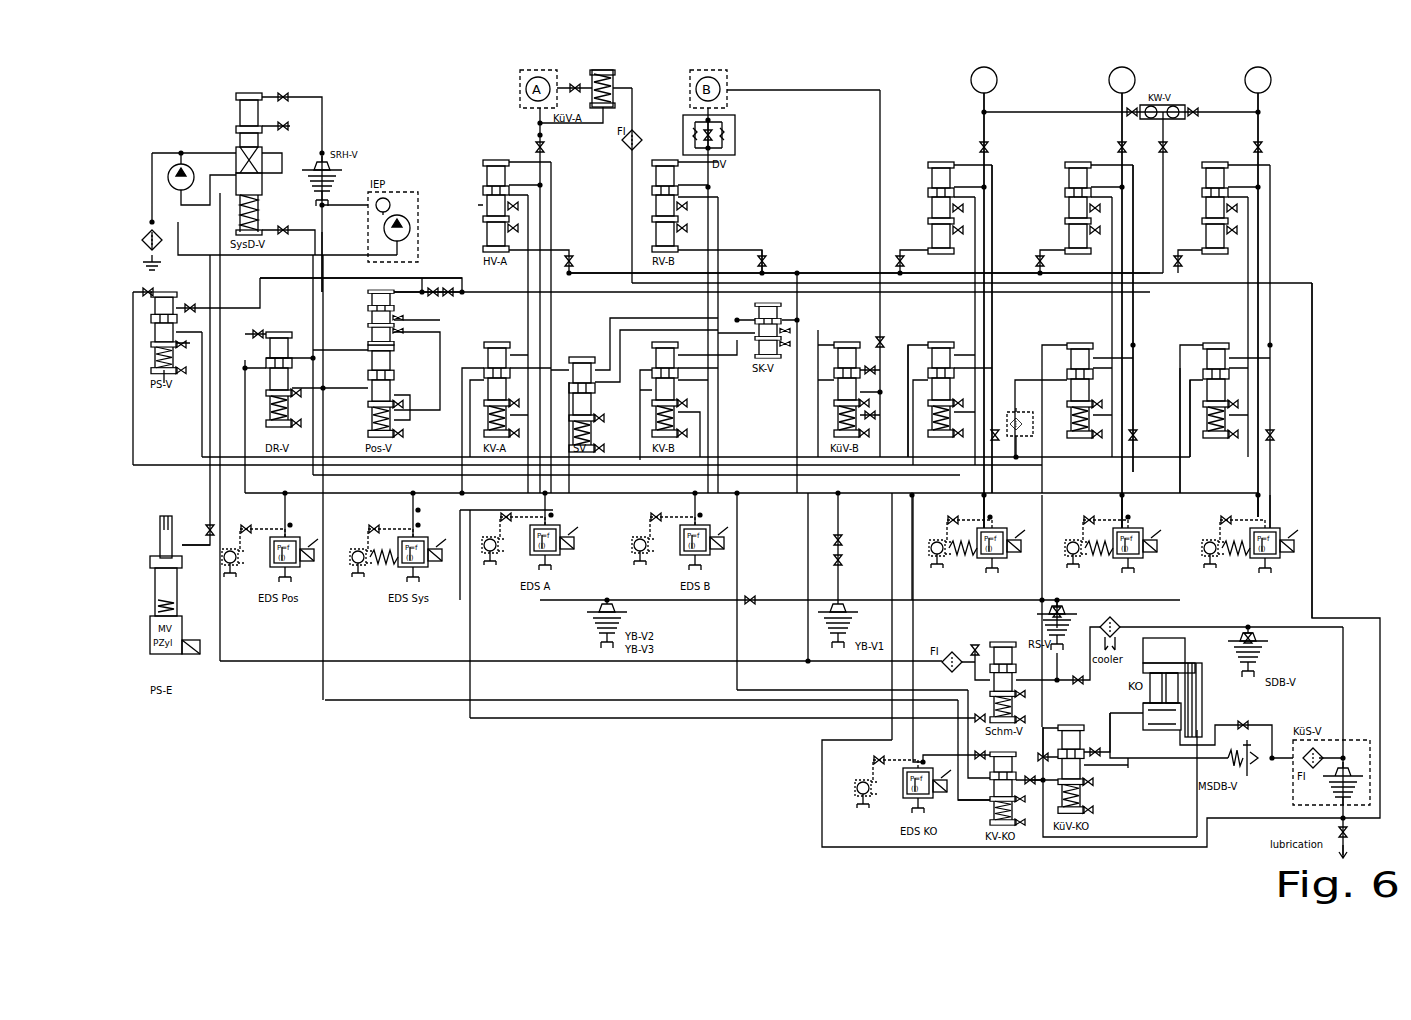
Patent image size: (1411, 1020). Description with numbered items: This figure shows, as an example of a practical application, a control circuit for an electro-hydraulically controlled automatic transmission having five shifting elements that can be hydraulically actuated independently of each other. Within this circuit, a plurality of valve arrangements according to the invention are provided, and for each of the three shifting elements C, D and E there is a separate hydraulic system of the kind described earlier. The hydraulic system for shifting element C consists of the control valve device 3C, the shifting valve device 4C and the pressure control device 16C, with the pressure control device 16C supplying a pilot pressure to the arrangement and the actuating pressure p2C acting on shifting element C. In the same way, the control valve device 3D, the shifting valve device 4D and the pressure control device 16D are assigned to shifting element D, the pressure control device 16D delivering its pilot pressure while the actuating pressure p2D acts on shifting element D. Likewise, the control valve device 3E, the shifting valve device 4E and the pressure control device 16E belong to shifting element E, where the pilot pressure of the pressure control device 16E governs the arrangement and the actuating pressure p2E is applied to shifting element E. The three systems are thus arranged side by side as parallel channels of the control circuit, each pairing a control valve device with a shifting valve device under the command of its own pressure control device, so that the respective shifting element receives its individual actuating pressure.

The control valve device 3C is at (932, 336).
The control valve device 3D is at (1087, 336).
The control valve device 3E is at (1228, 344).
The shifting valve device 4C is at (948, 158).
The shifting valve device 4D is at (1085, 158).
The shifting valve device 4E is at (1222, 158).
The pressure control device 16C is at (972, 575).
The pressure control device 16D is at (1137, 576).
The pressure control device 16E is at (1293, 539).
The actuating pressure p2C is at (985, 128).
The actuating pressure p2D is at (1123, 103).
The actuating pressure p2E is at (1262, 122).